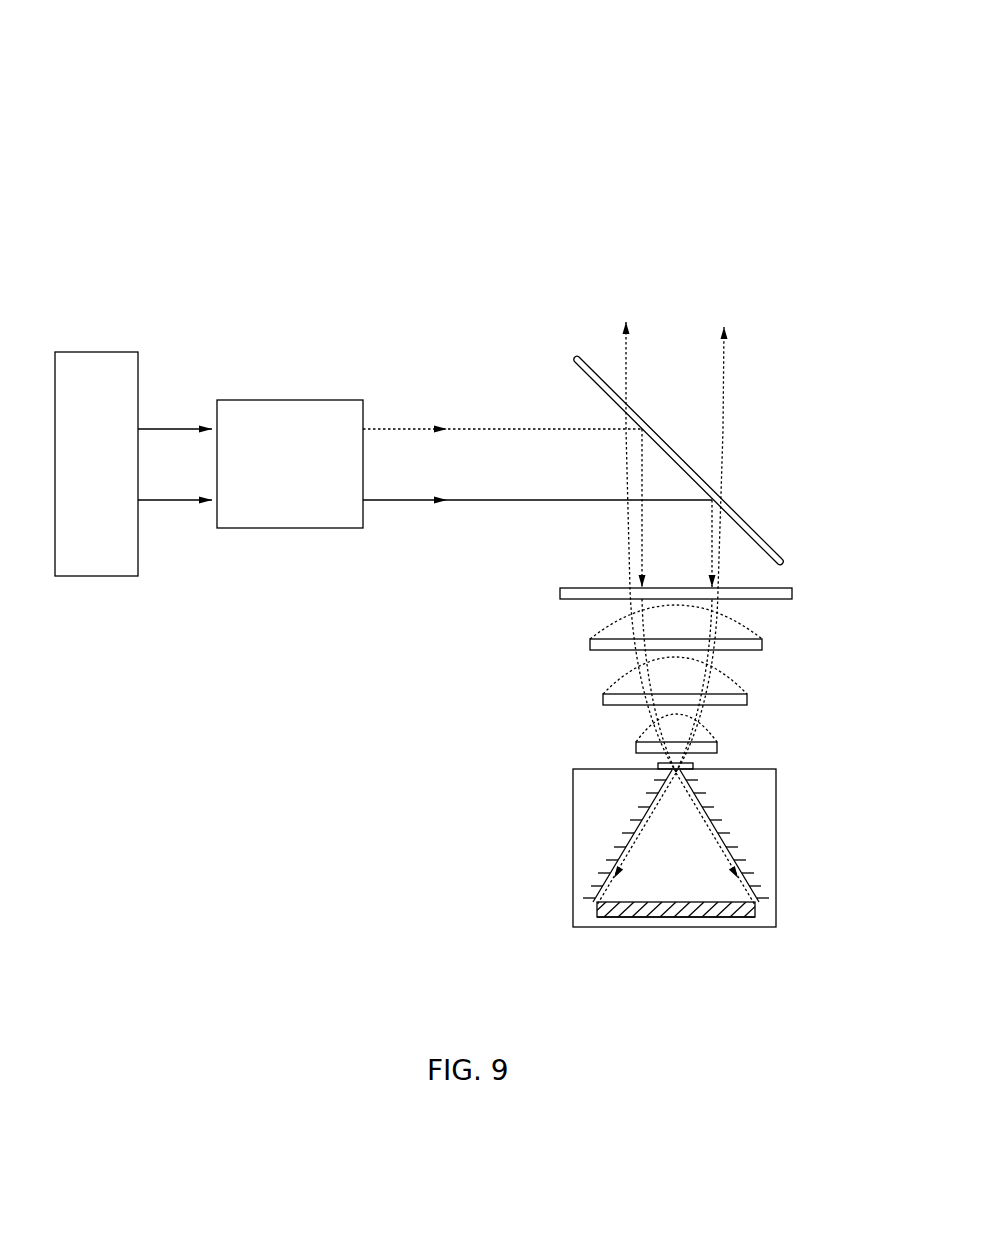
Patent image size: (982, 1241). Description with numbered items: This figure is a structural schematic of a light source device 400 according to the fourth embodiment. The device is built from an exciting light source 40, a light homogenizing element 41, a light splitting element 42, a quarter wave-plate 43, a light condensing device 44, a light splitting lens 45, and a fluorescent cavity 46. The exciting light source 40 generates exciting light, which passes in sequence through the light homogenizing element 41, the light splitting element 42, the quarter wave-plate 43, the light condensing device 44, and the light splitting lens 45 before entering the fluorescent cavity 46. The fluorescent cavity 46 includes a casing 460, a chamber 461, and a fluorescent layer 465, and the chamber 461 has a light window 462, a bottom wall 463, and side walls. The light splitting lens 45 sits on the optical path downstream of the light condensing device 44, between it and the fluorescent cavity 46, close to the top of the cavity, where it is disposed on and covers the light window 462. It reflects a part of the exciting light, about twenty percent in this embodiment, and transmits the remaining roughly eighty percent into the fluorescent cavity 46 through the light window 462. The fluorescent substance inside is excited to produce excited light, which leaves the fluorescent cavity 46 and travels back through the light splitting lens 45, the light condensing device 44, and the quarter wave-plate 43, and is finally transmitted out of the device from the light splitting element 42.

The light source device 400 is at (438, 120).
The exciting light source 40 is at (82, 365).
The light homogenizing element 41 is at (272, 415).
The light splitting element 42 is at (738, 512).
The quarter wave-plate 43 is at (570, 593).
The light condensing device 44 is at (598, 645).
The light splitting lens 45 is at (650, 768).
The fluorescent cavity 46 is at (682, 879).
The casing 460 is at (760, 822).
The chamber 461 is at (705, 873).
The light window 462 is at (682, 772).
The bottom wall 463 is at (620, 907).
The fluorescent layer 465 is at (727, 916).